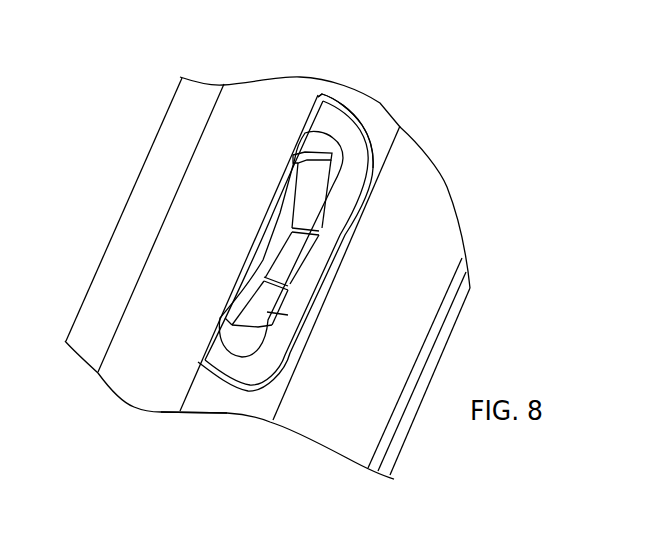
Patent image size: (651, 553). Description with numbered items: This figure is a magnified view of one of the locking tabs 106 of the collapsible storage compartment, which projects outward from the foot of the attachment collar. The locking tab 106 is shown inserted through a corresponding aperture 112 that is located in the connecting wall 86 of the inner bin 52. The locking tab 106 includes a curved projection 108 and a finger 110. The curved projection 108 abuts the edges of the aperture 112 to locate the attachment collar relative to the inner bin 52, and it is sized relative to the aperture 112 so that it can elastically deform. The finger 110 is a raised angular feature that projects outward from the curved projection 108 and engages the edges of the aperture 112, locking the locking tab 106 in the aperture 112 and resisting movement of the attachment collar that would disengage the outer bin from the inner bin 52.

The inner bin 52 is at (253, 111).
The connecting wall 86 is at (220, 402).
The locking tab 106 is at (322, 187).
The curved projection 108 is at (288, 315).
The finger 110 is at (297, 257).
The aperture 112 is at (330, 148).